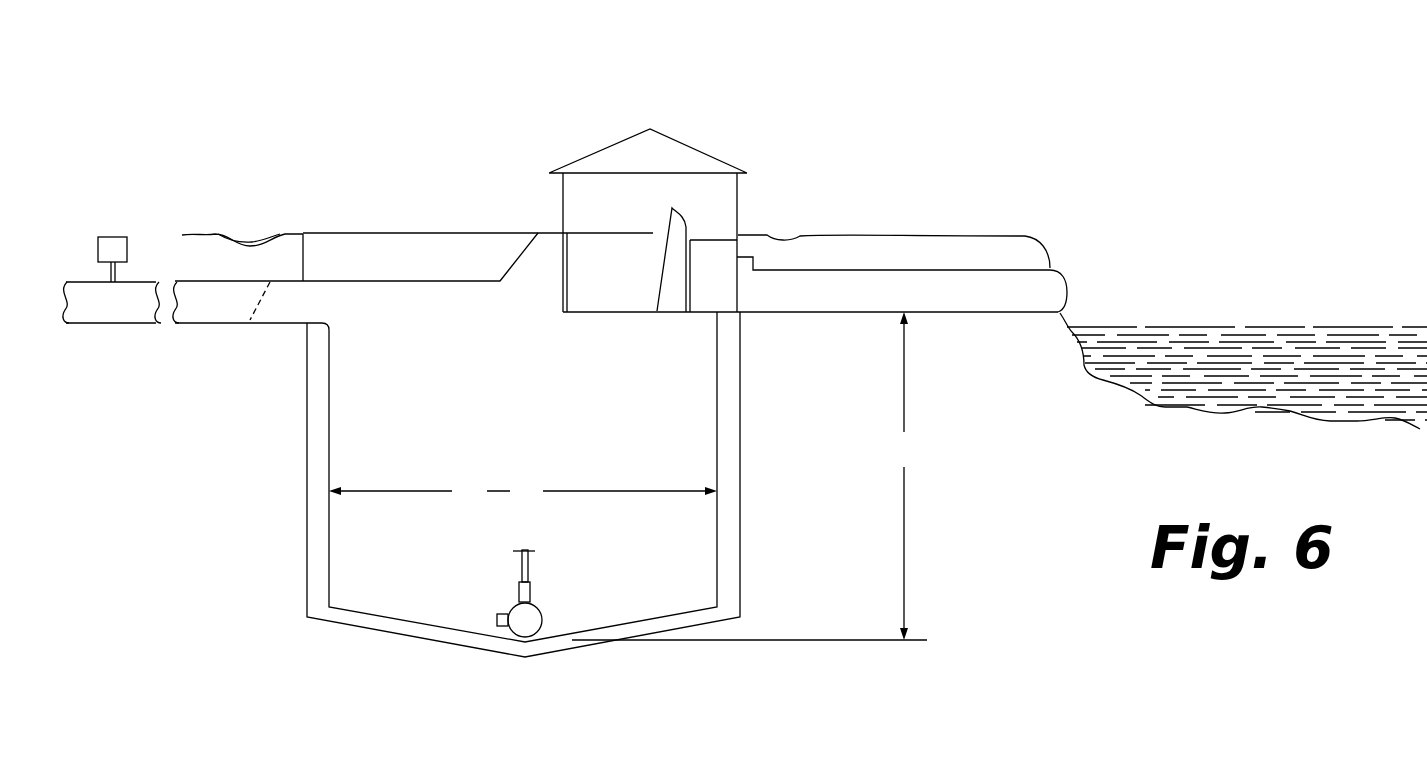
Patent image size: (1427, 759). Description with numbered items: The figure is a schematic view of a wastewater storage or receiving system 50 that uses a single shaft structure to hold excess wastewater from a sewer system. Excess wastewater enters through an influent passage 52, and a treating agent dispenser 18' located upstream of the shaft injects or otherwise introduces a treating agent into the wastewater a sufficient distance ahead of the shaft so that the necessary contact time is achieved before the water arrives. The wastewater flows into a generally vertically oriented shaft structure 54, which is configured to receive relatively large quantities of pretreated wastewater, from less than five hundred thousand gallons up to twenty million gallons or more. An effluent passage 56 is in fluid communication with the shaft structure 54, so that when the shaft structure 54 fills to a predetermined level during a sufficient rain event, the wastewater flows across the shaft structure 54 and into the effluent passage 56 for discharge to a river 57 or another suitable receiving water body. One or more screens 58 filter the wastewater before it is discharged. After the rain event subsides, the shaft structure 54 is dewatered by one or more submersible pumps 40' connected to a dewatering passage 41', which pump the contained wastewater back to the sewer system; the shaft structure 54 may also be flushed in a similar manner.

The wastewater storage or receiving system 50 is at (207, 113).
The treating agent dispenser 18' is at (112, 240).
The influent passage 52 is at (243, 280).
The shaft structure 54 is at (742, 517).
The effluent passage 56 is at (928, 268).
The river 57 is at (1295, 288).
The screen 58 is at (560, 272).
The submersible pump 40' is at (519, 658).
The dewatering passage 41' is at (483, 563).